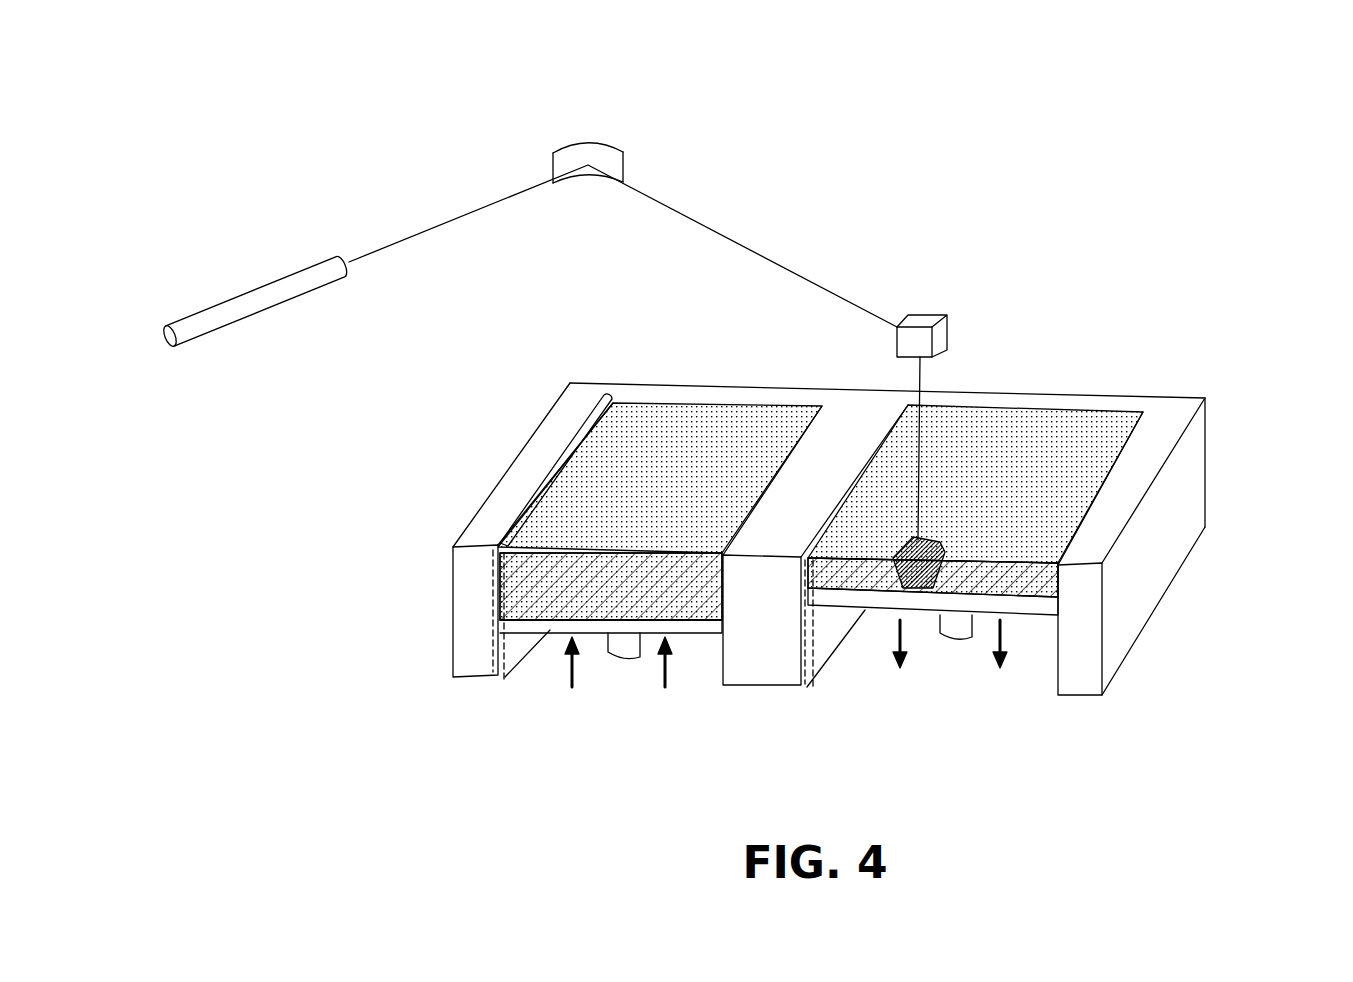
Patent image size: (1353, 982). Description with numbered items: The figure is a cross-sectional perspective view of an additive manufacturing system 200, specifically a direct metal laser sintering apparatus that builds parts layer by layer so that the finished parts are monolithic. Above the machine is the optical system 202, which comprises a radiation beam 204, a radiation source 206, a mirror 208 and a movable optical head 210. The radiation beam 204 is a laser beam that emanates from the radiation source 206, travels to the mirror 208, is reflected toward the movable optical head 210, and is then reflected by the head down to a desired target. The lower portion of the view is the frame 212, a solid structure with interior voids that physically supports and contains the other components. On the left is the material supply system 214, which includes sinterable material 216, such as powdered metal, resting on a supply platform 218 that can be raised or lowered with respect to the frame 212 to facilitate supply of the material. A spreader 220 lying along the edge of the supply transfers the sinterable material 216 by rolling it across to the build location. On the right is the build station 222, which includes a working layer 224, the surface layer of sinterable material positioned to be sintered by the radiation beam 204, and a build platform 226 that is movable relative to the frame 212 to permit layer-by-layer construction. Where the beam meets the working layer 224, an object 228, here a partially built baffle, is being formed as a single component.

The additive manufacturing system 200 is at (455, 722).
The optical system 202 is at (684, 118).
The radiation beam 204 is at (442, 222).
The radiation source 206 is at (217, 304).
The mirror 208 is at (598, 146).
The movable optical head 210 is at (927, 316).
The frame 212 is at (1207, 470).
The material supply system 214 is at (678, 697).
The sinterable material 216 is at (532, 577).
The supply platform 218 is at (550, 627).
The spreader 220 is at (602, 401).
The build station 222 is at (1044, 714).
The working layer 224 is at (957, 516).
The build platform 226 is at (855, 597).
The object 228 is at (907, 587).